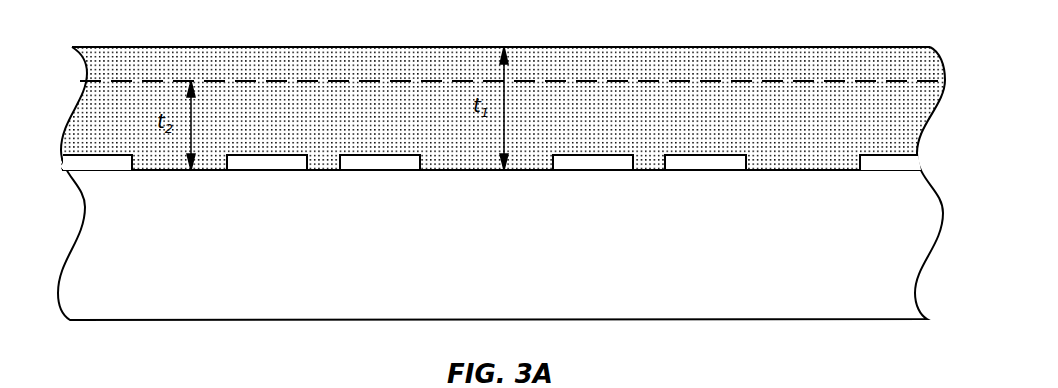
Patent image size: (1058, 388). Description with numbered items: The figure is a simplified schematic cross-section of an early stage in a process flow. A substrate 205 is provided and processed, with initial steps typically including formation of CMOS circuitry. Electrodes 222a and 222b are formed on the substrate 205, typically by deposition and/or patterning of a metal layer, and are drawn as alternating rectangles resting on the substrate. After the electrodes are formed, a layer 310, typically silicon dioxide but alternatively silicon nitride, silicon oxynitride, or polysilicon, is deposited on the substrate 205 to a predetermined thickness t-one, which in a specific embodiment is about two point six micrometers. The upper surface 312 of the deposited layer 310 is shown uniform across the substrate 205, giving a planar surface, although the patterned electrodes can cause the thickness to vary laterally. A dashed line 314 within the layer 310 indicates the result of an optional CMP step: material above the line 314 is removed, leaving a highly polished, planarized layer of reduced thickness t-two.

The substrate 205 is at (500, 235).
The layer 310 is at (503, 108).
The upper surface 312 is at (678, 47).
The dashed line 314 is at (272, 82).
The electrode 222a is at (268, 162).
The electrode 222b is at (382, 162).